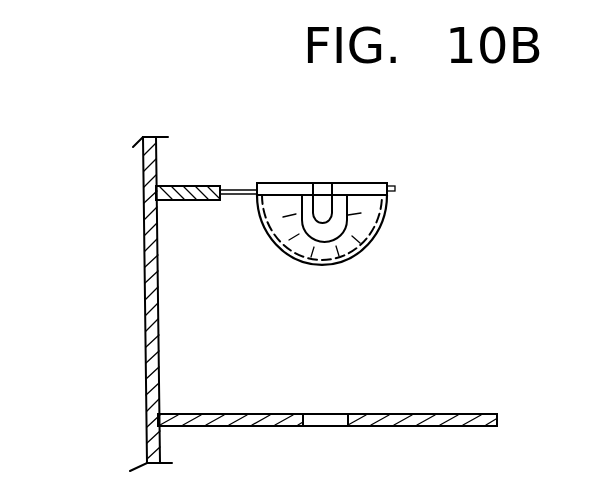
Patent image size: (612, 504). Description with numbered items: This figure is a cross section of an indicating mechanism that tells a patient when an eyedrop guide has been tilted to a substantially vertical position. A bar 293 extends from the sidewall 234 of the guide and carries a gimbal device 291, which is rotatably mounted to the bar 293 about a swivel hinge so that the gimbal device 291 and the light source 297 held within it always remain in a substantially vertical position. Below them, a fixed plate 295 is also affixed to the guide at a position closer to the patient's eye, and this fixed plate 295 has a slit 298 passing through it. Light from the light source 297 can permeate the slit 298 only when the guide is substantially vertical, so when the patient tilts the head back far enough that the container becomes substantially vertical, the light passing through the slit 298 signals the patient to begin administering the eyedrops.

The sidewall 234 is at (145, 323).
The bar 293 is at (212, 186).
The gimbal device 291 is at (376, 187).
The light source 297 is at (345, 222).
The fixed plate 295 is at (473, 412).
The slit 298 is at (332, 413).